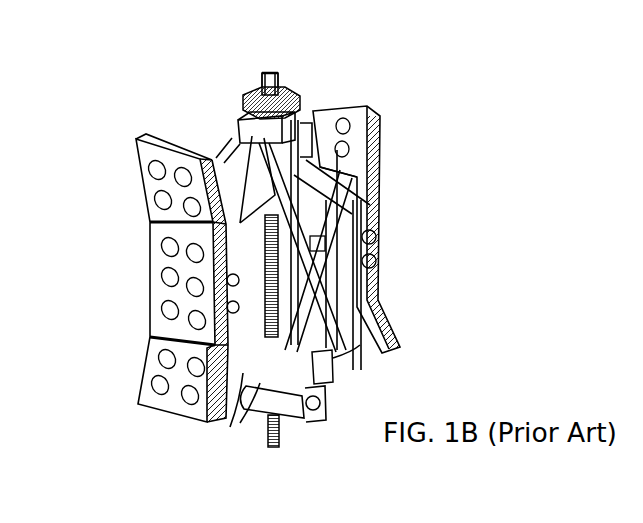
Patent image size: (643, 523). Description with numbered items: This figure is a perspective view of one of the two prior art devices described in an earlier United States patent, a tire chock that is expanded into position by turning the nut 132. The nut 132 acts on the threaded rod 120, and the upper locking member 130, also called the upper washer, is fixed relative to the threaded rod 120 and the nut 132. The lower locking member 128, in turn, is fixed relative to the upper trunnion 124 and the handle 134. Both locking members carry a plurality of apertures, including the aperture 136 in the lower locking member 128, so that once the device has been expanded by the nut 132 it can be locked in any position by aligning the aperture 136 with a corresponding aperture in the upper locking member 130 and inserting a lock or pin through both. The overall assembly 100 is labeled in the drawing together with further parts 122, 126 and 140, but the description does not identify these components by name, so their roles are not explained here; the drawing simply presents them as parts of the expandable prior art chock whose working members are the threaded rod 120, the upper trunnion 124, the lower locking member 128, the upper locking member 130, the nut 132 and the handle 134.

The prior art distraction device 100 is at (119, 105).
The threaded rod 120 is at (139, 366).
The lower pivot joint 122 is at (324, 408).
The upper trunnion 124 is at (348, 352).
The linkage arms 126 is at (246, 108).
The lower locking member 128 is at (320, 102).
The upper locking member 130 is at (256, 94).
The nut 132 is at (280, 68).
The handle 134 is at (230, 131).
The aperture 136 is at (300, 97).
The lower bracket 140 is at (249, 423).